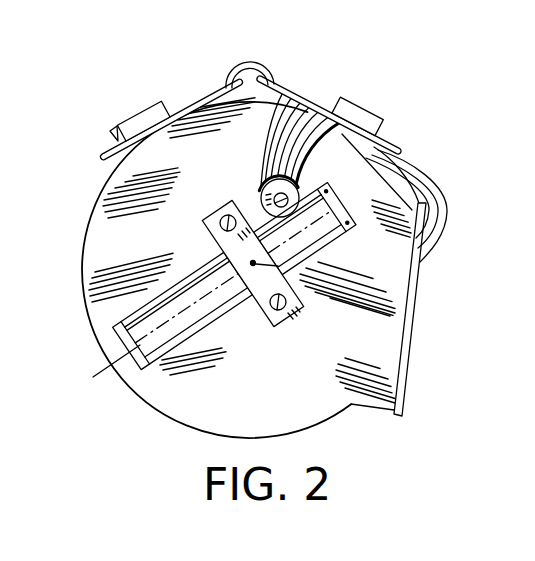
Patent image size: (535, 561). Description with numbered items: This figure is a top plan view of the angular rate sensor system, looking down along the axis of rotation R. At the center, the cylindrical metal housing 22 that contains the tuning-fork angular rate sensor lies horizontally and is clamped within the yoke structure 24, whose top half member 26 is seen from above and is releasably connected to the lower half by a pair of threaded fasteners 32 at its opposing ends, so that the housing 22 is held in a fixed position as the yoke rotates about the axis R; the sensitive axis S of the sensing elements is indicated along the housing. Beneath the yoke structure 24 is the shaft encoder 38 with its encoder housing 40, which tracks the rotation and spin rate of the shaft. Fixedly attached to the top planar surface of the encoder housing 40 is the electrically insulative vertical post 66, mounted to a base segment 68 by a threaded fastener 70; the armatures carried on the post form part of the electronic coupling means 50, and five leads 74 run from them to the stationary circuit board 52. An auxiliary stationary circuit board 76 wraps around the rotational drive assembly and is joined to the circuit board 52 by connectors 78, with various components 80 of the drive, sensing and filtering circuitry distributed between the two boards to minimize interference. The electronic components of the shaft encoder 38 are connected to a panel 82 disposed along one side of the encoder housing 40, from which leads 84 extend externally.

The cylindrical metal housing 22 is at (124, 320).
The yoke structure 24 is at (262, 320).
The top half member 26 is at (276, 330).
The threaded fasteners 32 is at (210, 225).
The shaft encoder 38 is at (128, 390).
The encoder housing 40 is at (100, 240).
The electronic coupling means 50 is at (343, 142).
The stationary circuit board 52 is at (297, 90).
The electrically insulative vertical post 66 is at (262, 180).
The base segment 68 is at (261, 193).
The threaded fastener 70 is at (303, 182).
The leads 74 is at (264, 142).
The auxiliary stationary circuit board 76 is at (200, 100).
The connectors 78 is at (248, 60).
The components 80 is at (142, 112).
The panel 82 is at (422, 291).
The leads 84 is at (450, 222).
The axis of rotation R is at (302, 277).
The sensitive axis S is at (103, 370).